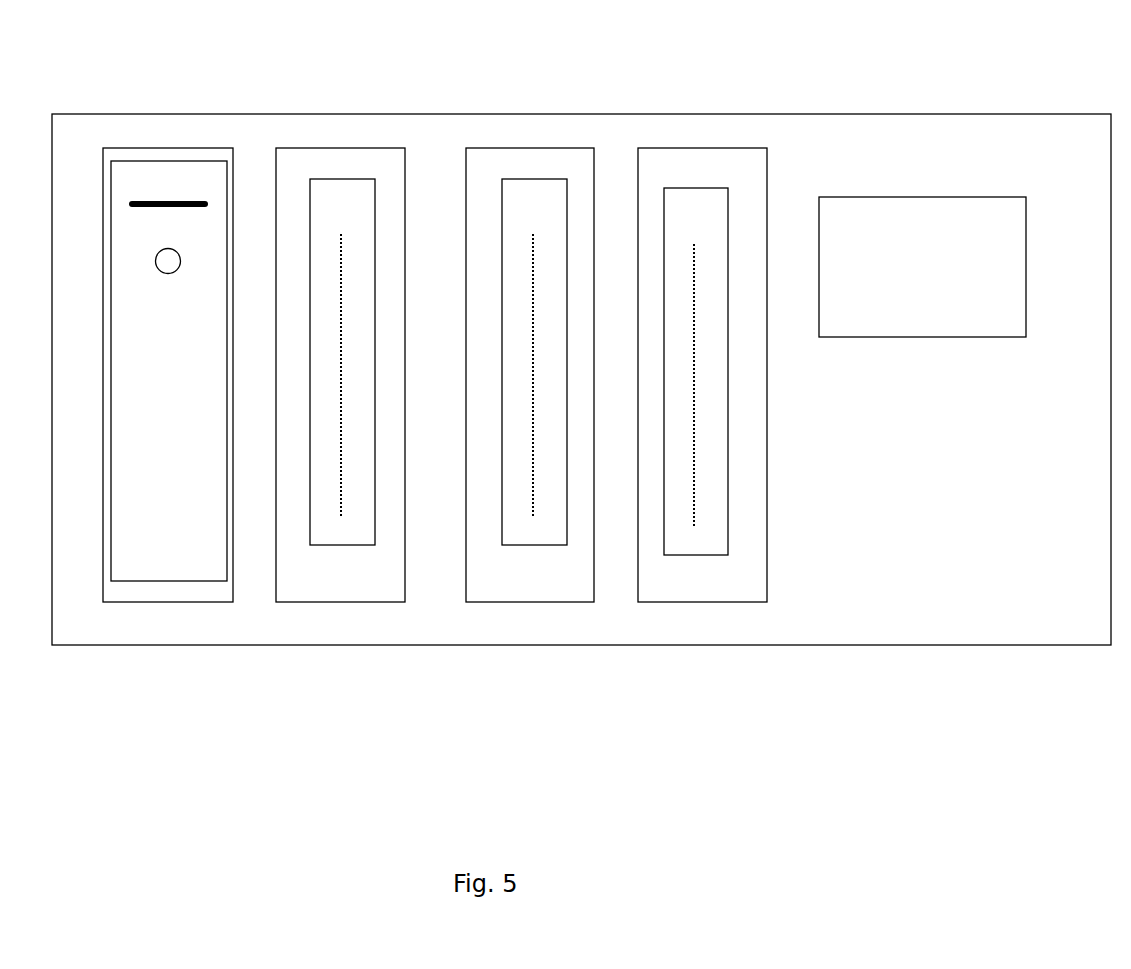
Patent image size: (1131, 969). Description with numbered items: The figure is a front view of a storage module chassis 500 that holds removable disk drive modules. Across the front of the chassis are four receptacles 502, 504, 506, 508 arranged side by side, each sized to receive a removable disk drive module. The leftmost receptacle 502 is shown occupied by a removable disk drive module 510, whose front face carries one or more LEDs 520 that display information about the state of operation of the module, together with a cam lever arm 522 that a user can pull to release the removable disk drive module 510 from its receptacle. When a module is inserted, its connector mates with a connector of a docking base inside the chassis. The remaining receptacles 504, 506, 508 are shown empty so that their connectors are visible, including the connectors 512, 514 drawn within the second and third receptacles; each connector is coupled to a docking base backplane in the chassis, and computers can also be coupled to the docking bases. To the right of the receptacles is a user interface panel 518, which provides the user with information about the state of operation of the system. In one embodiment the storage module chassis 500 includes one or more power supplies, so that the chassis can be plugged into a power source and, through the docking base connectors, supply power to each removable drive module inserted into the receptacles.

The storage module chassis 500 is at (800, 833).
The receptacle 502 is at (120, 148).
The receptacle 504 is at (297, 148).
The receptacle 506 is at (500, 148).
The receptacle 508 is at (703, 148).
The removable disk drive module 510 is at (169, 371).
The connector 512 is at (342, 545).
The connector 514 is at (534, 545).
The user interface panel 518 is at (857, 197).
The LED 520 is at (155, 261).
The cam lever arm 522 is at (130, 204).